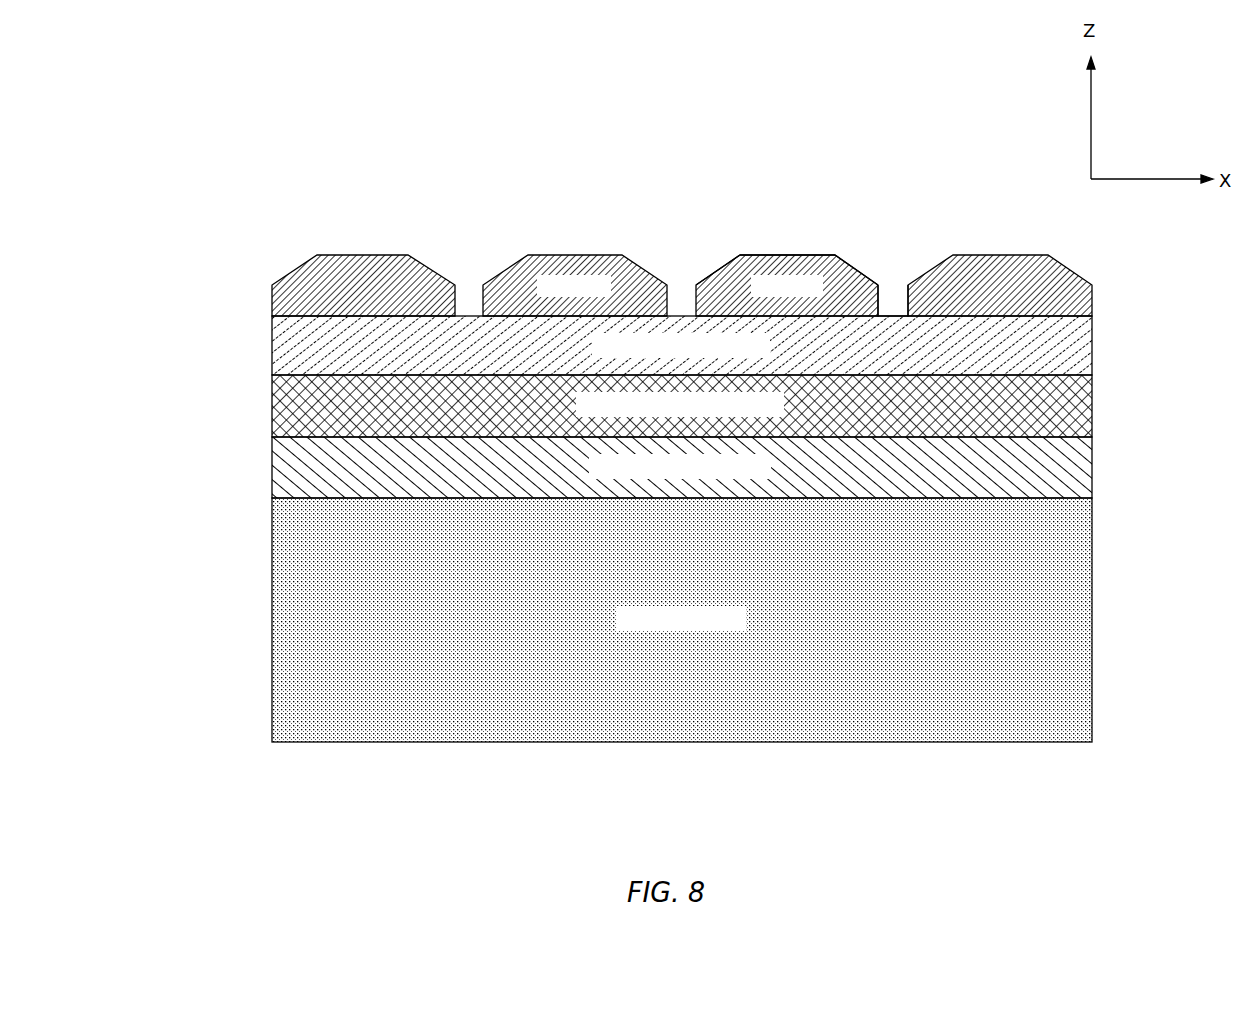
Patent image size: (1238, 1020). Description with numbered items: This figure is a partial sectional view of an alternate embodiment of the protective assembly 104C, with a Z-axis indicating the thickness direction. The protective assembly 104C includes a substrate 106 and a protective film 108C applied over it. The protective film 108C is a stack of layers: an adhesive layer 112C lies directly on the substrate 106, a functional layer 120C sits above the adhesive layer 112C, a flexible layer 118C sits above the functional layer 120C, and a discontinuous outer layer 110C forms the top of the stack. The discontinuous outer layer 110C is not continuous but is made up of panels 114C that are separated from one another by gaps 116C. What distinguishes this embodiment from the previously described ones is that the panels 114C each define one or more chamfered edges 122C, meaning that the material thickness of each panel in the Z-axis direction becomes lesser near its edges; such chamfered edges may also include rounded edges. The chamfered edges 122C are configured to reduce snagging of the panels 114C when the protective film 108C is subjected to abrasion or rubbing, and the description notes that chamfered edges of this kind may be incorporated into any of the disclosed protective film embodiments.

The protective assembly 104C is at (640, 404).
The protective film 108C is at (640, 306).
The discontinuous outer layer 110C is at (1092, 305).
The flexible layer 118C is at (1092, 347).
The functional layer 120C is at (1092, 407).
The adhesive layer 112C is at (1092, 467).
The substrate 106 is at (1092, 622).
The panels 114C is at (788, 255).
The chamfered edges 122C is at (717, 273).
The gaps 116C is at (893, 270).